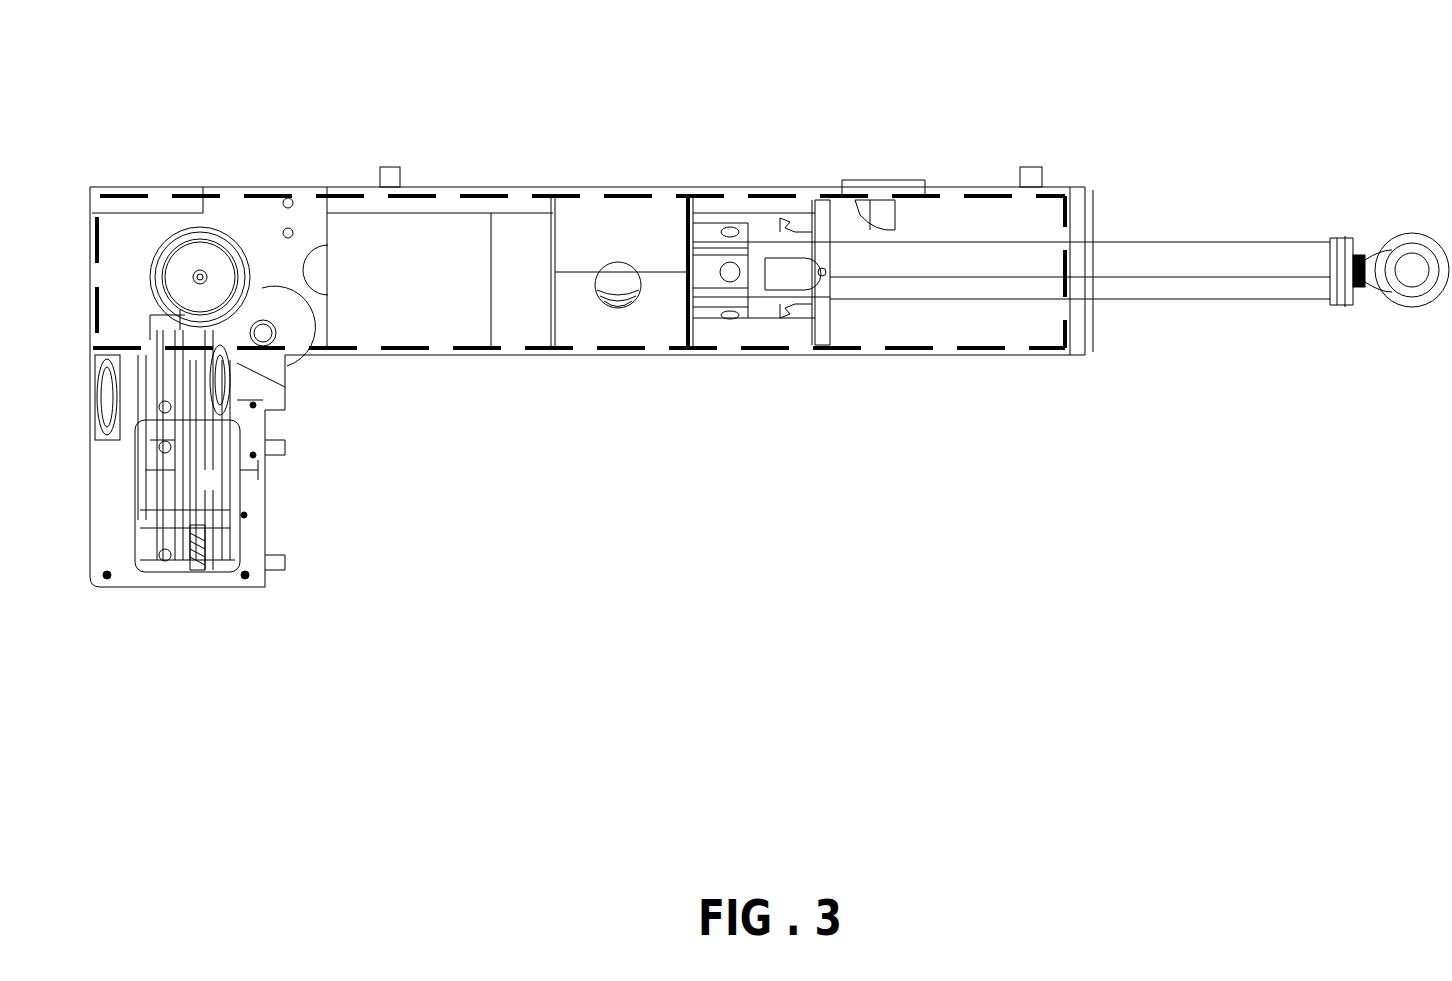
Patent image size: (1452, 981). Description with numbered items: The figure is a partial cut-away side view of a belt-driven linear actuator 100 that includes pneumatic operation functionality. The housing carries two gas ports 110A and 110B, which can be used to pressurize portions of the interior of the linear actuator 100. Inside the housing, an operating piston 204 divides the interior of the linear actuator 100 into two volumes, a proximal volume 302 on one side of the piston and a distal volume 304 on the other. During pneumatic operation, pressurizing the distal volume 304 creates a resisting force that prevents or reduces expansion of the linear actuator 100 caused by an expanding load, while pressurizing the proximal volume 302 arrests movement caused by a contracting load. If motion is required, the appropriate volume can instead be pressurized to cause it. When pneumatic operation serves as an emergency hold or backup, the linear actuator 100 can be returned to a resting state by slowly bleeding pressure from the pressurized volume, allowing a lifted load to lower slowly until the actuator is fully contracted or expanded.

The linear actuator 100 is at (1318, 124).
The gas port 110A is at (399, 198).
The gas port 110B is at (1033, 182).
The operating piston 204 is at (615, 198).
The proximal volume 302 is at (547, 350).
The distal volume 304 is at (915, 350).